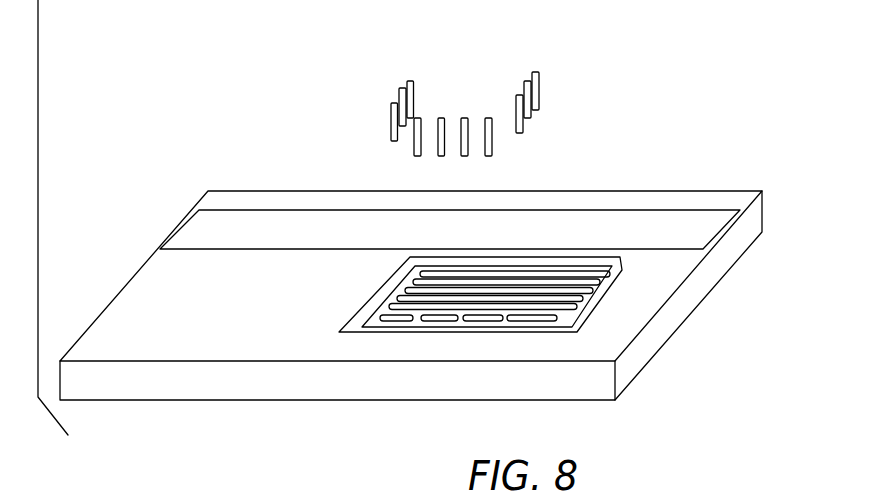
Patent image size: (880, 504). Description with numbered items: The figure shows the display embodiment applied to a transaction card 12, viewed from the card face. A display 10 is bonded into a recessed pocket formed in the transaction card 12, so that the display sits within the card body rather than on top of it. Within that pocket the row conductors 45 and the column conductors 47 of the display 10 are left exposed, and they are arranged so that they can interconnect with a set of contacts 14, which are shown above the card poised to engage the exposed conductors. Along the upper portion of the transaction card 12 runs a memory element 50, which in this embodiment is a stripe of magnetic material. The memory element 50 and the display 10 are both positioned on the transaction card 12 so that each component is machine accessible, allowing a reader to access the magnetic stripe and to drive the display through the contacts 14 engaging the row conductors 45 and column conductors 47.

The transaction card 12 is at (238, 116).
The contacts 14 is at (554, 70).
The memory element 50 is at (327, 218).
The display 10 is at (610, 317).
The column conductors 47 is at (390, 330).
The row conductors 45 is at (597, 295).